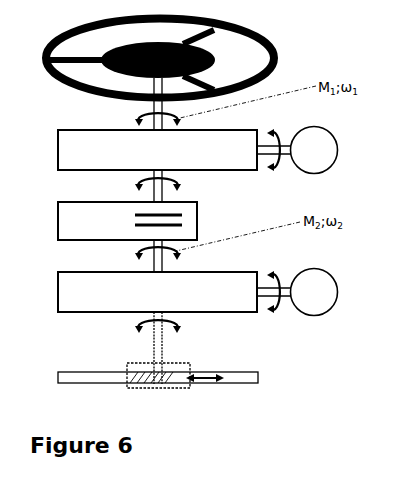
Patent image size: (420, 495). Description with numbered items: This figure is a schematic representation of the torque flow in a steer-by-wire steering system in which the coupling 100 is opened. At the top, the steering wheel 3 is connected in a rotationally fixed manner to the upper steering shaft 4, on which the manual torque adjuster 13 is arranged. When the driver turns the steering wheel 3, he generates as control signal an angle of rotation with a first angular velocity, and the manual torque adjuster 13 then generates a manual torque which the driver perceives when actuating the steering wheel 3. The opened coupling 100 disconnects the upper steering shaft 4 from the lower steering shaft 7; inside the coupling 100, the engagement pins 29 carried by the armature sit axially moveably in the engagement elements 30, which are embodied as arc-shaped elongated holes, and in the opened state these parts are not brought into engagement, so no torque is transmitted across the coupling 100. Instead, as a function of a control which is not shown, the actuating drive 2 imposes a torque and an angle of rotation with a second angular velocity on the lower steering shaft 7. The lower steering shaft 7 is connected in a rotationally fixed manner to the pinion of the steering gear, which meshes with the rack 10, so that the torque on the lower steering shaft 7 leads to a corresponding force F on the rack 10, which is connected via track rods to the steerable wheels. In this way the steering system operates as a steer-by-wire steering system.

The steering wheel 3 is at (233, 32).
The upper steering shaft 4 is at (154, 106).
The manual torque adjuster 13 is at (318, 136).
The coupling 100 is at (88, 220).
The engagement elements 30 is at (203, 198).
The engagement pins 29 is at (203, 219).
The actuating drive 2 is at (322, 279).
The lower steering shaft 7 is at (156, 352).
The rack 10 is at (97, 378).
The steering force F is at (206, 386).